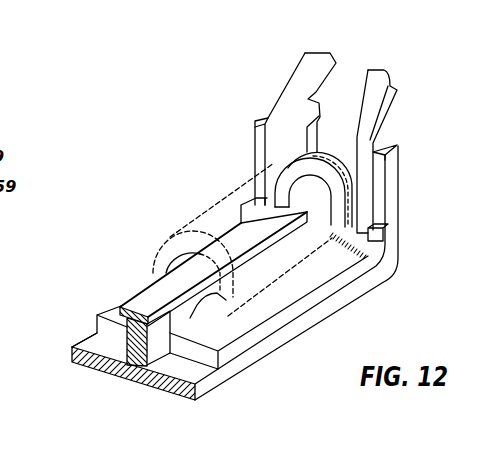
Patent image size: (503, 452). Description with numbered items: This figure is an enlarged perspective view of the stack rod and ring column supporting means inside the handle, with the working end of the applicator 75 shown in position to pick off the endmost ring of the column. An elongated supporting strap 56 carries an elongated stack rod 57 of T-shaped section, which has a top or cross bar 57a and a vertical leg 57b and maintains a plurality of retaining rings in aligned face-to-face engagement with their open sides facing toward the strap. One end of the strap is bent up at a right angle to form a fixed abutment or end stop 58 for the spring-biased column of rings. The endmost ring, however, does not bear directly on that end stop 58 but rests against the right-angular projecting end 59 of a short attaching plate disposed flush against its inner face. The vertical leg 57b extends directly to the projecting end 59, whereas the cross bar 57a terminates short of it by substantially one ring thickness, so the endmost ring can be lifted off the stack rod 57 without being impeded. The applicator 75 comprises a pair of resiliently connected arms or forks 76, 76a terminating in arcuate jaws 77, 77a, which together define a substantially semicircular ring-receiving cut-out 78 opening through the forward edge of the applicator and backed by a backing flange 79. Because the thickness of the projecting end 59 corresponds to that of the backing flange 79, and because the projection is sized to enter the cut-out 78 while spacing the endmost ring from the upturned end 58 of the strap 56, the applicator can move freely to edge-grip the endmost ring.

The supporting strap 56 is at (208, 380).
The stack rod 57 is at (180, 313).
The cross bar 57a is at (173, 283).
The vertical leg 57b is at (127, 343).
The right-angular end 58 is at (390, 165).
The projecting end 59 is at (317, 198).
The applicator 75 is at (334, 150).
The arm or fork 76 is at (318, 63).
The arm or fork 76a is at (375, 90).
The arcuate jaw 77 is at (274, 162).
The arcuate jaw 77a is at (353, 182).
The ring-receiving cut-out 78 is at (291, 194).
The backing flange 79 is at (300, 177).